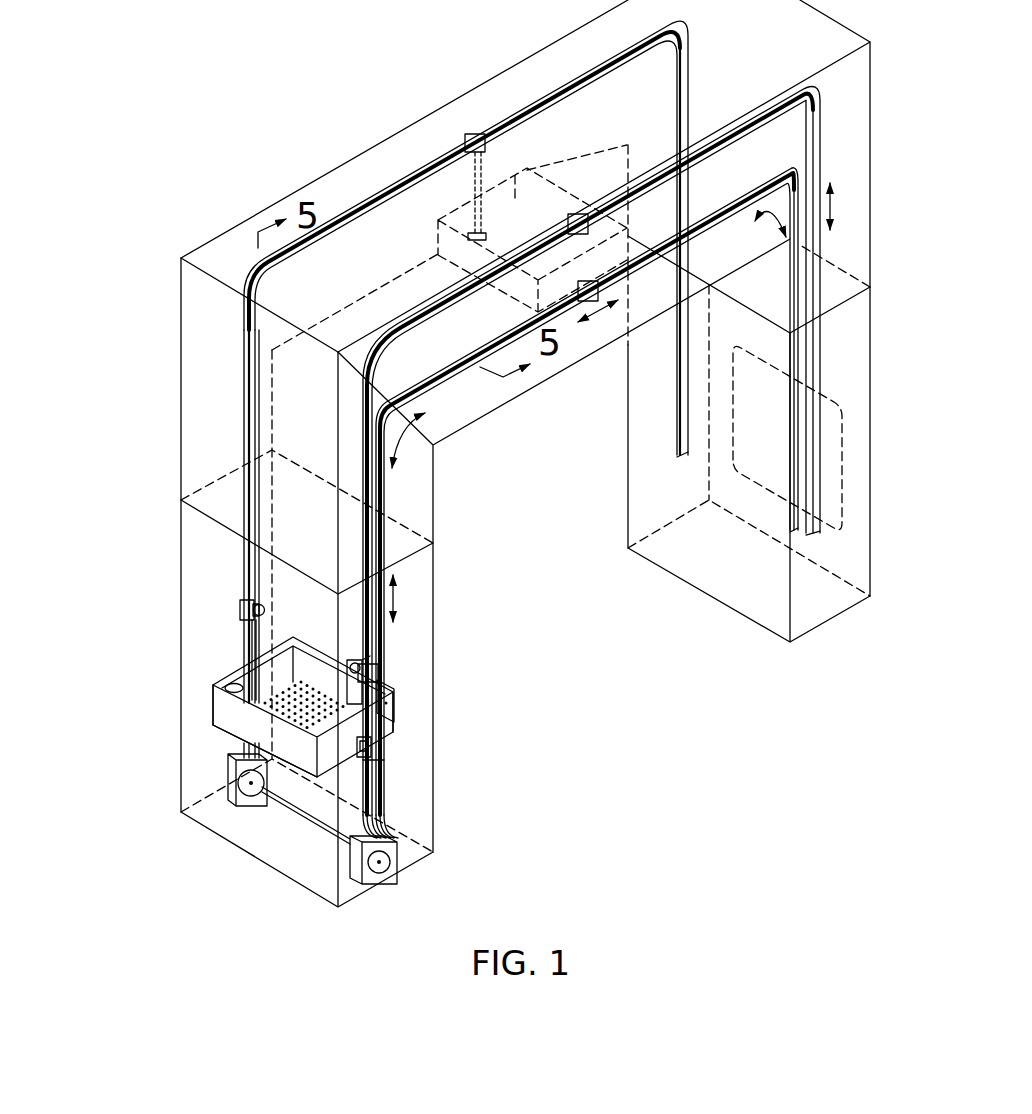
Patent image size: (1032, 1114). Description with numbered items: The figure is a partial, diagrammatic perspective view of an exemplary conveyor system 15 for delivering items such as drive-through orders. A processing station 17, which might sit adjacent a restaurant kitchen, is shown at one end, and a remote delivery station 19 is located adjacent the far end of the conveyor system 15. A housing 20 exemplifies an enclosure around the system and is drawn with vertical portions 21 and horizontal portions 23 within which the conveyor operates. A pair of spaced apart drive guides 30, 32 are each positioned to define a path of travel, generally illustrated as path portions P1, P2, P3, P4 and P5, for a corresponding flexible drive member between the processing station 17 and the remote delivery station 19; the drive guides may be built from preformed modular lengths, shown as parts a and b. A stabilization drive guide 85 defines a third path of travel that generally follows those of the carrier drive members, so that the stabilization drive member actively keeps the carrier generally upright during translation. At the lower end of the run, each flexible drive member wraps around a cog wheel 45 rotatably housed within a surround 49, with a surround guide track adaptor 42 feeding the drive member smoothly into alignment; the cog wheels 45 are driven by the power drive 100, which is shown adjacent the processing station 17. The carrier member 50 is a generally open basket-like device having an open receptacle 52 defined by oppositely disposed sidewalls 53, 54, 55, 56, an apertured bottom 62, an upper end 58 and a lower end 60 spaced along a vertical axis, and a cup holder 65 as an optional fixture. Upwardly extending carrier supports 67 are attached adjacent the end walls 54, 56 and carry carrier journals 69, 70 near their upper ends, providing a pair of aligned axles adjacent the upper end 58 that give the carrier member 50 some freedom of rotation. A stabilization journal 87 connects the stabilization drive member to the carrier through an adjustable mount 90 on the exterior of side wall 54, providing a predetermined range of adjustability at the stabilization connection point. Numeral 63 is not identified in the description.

The conveyor system 15 is at (157, 350).
The processing station 17 is at (137, 716).
The remote delivery station 19 is at (880, 270).
The housing 20 is at (231, 229).
The vertical portions 21 is at (181, 449).
The horizontal portions 23 is at (373, 148).
The drive guide 30 is at (396, 509).
The drive guide 32 is at (240, 392).
The surround guide track adaptor 42 is at (398, 826).
The cog wheel 45 is at (383, 862).
The surround 49 is at (230, 798).
The carrier member 50 is at (215, 672).
The open receptacle 52 is at (307, 660).
The sidewall 53 is at (238, 722).
The end wall 54 is at (397, 704).
The sidewall 55 is at (290, 672).
The end wall 56 is at (213, 673).
The upper end 58 is at (263, 597).
The lower end 60 is at (395, 737).
The bottom 62 is at (243, 708).
The hanger rod 63 is at (257, 660).
The cup holder 65 is at (220, 690).
The carrier support 67 is at (240, 612).
The carrier journal 69 is at (366, 664).
The carrier journal 70 is at (246, 600).
The stabilization drive guide 85 is at (360, 422).
The stabilization journal 87 is at (372, 745).
The adjustable mount 90 is at (372, 758).
The power drive 100 is at (268, 823).
The path of travel portion P1 is at (408, 598).
The path of travel portion P2 is at (408, 441).
The path of travel portion P3 is at (598, 317).
The path of travel portion P4 is at (775, 200).
The path of travel portion P5 is at (846, 206).
The drive guide part a is at (390, 806).
The drive guide part b is at (384, 546).